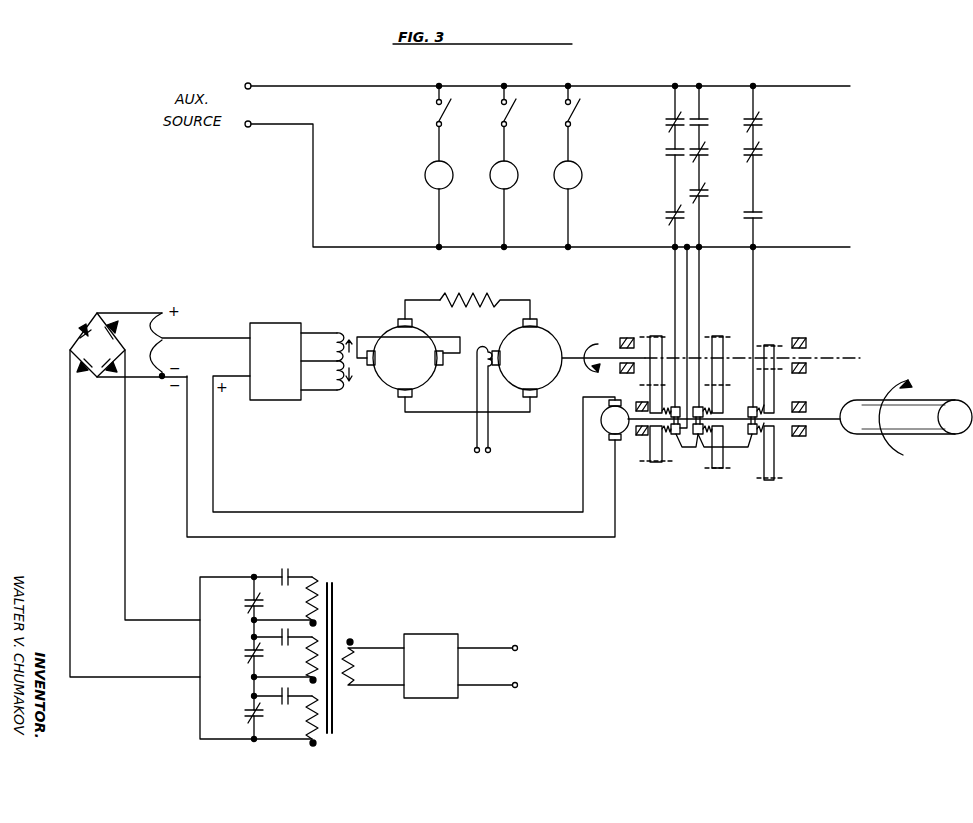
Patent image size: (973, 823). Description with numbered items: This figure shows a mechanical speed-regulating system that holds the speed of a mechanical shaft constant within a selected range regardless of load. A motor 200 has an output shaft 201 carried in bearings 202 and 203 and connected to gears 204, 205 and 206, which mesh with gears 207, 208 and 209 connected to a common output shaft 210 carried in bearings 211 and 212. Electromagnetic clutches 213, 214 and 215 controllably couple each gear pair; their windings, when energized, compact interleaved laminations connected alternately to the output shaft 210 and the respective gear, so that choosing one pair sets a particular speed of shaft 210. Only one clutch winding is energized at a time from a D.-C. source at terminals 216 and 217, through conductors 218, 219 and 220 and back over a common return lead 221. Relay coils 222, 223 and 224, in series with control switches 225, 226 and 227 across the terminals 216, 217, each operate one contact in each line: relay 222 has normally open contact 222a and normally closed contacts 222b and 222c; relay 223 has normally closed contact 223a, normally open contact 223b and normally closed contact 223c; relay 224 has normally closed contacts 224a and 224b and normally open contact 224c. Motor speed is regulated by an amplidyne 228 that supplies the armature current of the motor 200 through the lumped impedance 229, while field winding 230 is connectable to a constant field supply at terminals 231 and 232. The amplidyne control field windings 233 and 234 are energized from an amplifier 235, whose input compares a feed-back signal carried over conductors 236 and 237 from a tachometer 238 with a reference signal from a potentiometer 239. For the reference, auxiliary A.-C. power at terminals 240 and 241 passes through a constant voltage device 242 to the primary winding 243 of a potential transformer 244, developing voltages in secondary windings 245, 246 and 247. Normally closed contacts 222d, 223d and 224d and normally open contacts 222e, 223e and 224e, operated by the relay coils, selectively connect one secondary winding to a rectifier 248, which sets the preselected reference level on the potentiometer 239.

The motor 200 is at (553, 340).
The output shaft 201 is at (573, 356).
The bearing 202 is at (630, 340).
The bearing 203 is at (805, 342).
The gear 204 is at (662, 333).
The gear 205 is at (738, 325).
The gear 206 is at (780, 333).
The gear 207 is at (657, 465).
The gear 208 is at (720, 470).
The gear 209 is at (773, 481).
The common output shaft 210 is at (882, 437).
The bearing 211 is at (642, 432).
The bearing 212 is at (798, 440).
The electromagnetic clutch 213 is at (672, 441).
The electromagnetic clutch 214 is at (705, 400).
The electromagnetic clutch 215 is at (763, 441).
The terminal 216 is at (246, 128).
The terminal 217 is at (249, 83).
The conductor 218 is at (672, 262).
The conductor 219 is at (700, 264).
The conductor 220 is at (756, 264).
The common return lead 221 is at (690, 287).
The relay coil 222 is at (430, 187).
The normally open contact 222a is at (661, 158).
The normally closed contact 222b is at (709, 154).
The normally closed contact 222c is at (763, 153).
The normally closed contact 222d is at (245, 607).
The normally open contact 222e is at (272, 568).
The relay coil 223 is at (498, 187).
The normally closed contact 223a is at (661, 123).
The normally open contact 223b is at (701, 116).
The normally closed contact 223c is at (763, 122).
The normally closed contact 223d is at (242, 654).
The normally open contact 223e is at (290, 632).
The relay coil 224 is at (558, 187).
The normally closed contact 224a is at (661, 212).
The normally closed contact 224b is at (710, 192).
The normally open contact 224c is at (763, 215).
The normally closed contact 224d is at (247, 715).
The normally open contact 224e is at (288, 706).
The control switch 225 is at (430, 110).
The control switch 226 is at (498, 110).
The control switch 227 is at (563, 110).
The amplidyne 228 is at (400, 326).
The impedance 229 is at (492, 284).
The field winding 230 is at (484, 350).
The terminal 231 is at (474, 453).
The terminal 232 is at (489, 453).
The amplidyne control field winding 233 is at (338, 332).
The amplidyne control field winding 234 is at (333, 392).
The amplifier 235 is at (282, 311).
The conductor 236 is at (475, 512).
The conductor 237 is at (480, 537).
The tachometer 238 is at (610, 440).
The potentiometer 239 is at (157, 362).
The terminal 240 is at (518, 647).
The terminal 241 is at (518, 686).
The constant voltage device 242 is at (446, 630).
The primary winding 243 is at (357, 658).
The potential transformer 244 is at (340, 606).
The secondary winding 245 is at (298, 745).
The secondary winding 246 is at (302, 652).
The secondary winding 247 is at (321, 582).
The rectifier 248 is at (72, 346).